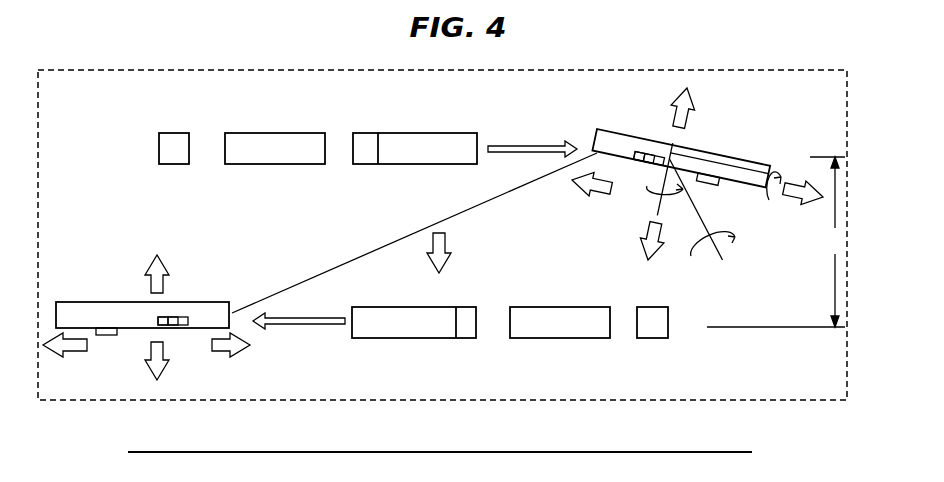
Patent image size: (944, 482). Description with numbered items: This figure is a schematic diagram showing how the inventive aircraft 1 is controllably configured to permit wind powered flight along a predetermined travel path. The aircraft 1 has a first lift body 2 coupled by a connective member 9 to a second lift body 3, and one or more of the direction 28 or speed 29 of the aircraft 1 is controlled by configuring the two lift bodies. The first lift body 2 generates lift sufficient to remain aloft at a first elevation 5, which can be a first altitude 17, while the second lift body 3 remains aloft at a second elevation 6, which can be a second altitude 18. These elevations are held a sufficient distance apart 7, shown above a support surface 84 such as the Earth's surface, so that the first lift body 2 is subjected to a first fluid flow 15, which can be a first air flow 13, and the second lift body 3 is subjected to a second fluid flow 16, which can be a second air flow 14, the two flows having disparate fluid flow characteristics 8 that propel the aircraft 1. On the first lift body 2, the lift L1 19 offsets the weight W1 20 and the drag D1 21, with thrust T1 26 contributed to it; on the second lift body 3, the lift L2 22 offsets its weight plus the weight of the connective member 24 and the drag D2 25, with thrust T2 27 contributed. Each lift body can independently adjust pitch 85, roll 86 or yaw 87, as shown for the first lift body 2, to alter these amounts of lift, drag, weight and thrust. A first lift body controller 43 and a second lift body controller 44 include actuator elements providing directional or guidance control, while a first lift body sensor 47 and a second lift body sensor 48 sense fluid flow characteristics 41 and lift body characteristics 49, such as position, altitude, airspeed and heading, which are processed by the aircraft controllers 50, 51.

The aircraft 1 is at (121, 70).
The fluid flow characteristics 41 is at (413, 235).
The first elevation 5 is at (275, 126).
The first altitude 17 is at (258, 132).
The first air flow 13 is at (465, 126).
The first fluid flow 15 is at (410, 133).
The disparate fluid flow characteristics 8 is at (415, 238).
The second air flow 14 is at (364, 347).
The second fluid flow 16 is at (385, 337).
The second elevation 6 is at (560, 300).
The second altitude 18 is at (546, 307).
The connective member 9 is at (347, 265).
The weight of the connective member 24 is at (430, 268).
The second lift body 3 is at (203, 322).
The first lift body 2 is at (680, 158).
The direction 28 is at (418, 254).
The speed 29 is at (418, 254).
The second lift body controller 44 is at (190, 317).
The aircraft controller 51 is at (160, 318).
The second lift body sensor 48 is at (176, 318).
The first lift body controller 43 is at (640, 158).
The first lift body sensor 47 is at (650, 160).
The aircraft controller 50 is at (660, 160).
The lift body characteristics 49 is at (100, 336).
The lift L2 22 is at (150, 268).
The weight W1 20 is at (150, 372).
The drag D2 25 is at (57, 357).
The thrust T2 27 is at (240, 357).
The lift L1 19 is at (698, 106).
The thrust T1 26 is at (595, 193).
The drag D1 21 is at (815, 205).
The yaw 87 is at (653, 195).
The pitch 85 is at (712, 260).
The roll 86 is at (772, 202).
The distance apart 7 is at (776, 242).
The support surface 84 is at (685, 452).